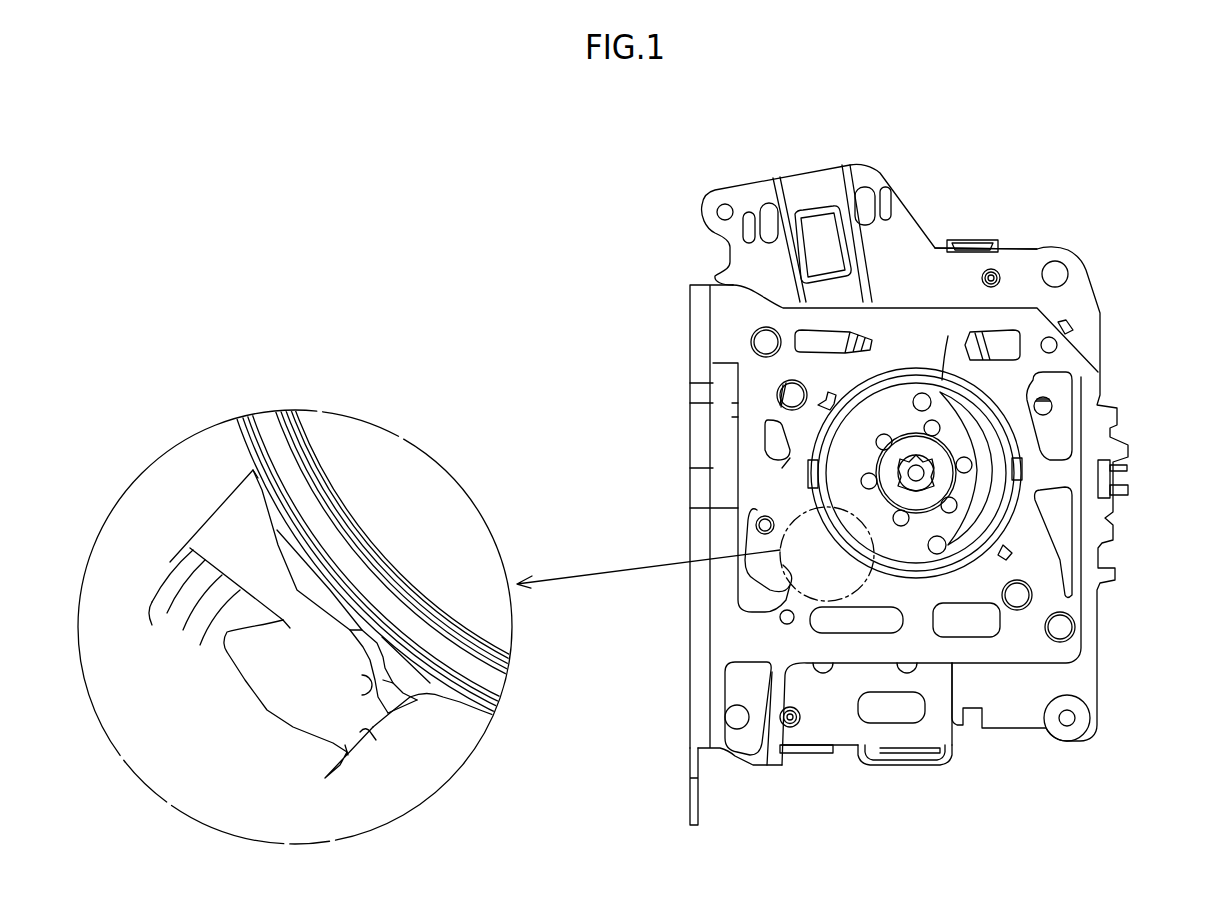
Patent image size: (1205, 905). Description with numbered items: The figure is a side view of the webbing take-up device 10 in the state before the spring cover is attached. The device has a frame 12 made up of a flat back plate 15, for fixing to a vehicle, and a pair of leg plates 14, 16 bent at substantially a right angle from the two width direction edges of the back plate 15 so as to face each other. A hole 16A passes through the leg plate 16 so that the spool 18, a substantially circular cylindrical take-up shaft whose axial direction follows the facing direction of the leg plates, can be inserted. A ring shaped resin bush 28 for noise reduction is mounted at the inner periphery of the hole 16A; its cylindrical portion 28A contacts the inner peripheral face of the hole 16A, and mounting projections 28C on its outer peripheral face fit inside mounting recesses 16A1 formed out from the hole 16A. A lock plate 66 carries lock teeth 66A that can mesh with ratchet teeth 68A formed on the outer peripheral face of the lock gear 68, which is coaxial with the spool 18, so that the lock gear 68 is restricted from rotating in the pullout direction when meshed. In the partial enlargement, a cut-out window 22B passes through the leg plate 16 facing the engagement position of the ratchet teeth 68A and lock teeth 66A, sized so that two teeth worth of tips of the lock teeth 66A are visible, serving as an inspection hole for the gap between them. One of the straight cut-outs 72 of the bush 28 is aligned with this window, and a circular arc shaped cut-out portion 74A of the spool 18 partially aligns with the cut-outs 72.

The webbing take-up device 10 is at (992, 112).
The frame 12 is at (1113, 296).
The leg plate 14 is at (1021, 266).
The back plate 15 is at (687, 762).
The leg plate 16 is at (1085, 394).
The hole 16A is at (943, 344).
The mounting recesses 16A1 is at (886, 561).
The spool 18 is at (920, 396).
The cut-out window 22B is at (372, 742).
The bush 28 is at (918, 582).
The cylindrical portion 28A is at (920, 574).
The mounting projections 28C is at (909, 388).
The lock plate 66 is at (323, 780).
The lock teeth 66A is at (290, 625).
The lock gear 68 is at (235, 548).
The ratchet teeth 68A is at (242, 552).
The cut-outs 72 is at (422, 695).
The cut-out portion 74A is at (358, 677).